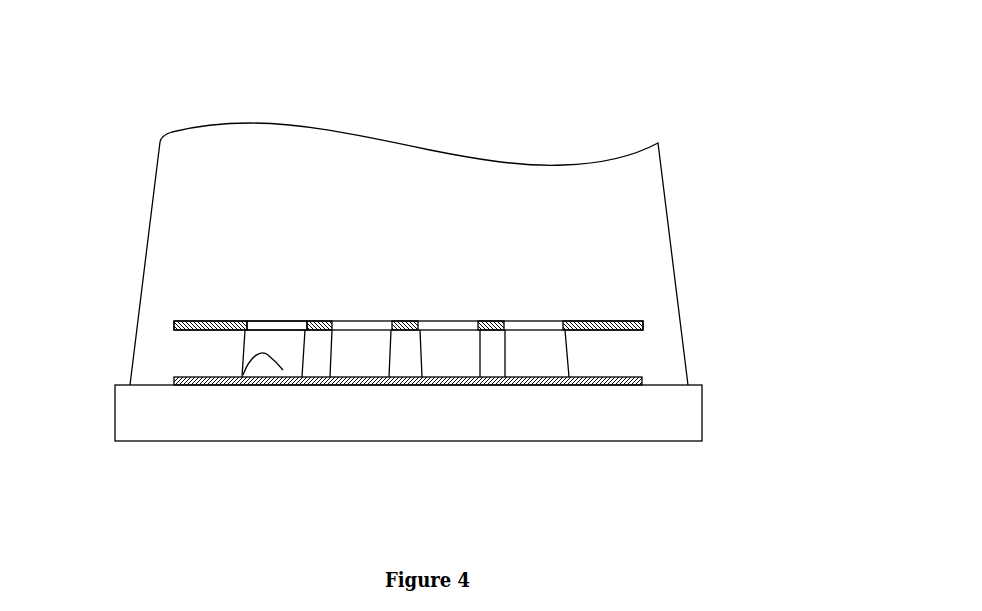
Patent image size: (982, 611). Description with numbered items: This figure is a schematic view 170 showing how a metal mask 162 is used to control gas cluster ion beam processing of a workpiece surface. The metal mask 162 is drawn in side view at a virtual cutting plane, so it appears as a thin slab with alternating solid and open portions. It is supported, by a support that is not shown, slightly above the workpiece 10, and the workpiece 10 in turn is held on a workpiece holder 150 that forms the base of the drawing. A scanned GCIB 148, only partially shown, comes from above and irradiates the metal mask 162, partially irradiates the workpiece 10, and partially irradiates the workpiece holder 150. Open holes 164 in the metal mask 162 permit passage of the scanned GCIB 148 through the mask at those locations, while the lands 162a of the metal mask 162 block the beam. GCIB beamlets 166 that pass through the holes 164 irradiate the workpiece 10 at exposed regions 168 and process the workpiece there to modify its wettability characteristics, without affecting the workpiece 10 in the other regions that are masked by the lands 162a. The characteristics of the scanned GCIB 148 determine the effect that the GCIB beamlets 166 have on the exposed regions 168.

The schematic view 170 is at (184, 92).
The scanned GCIB 148 is at (628, 222).
The workpiece holder 150 is at (687, 413).
The workpiece 10 is at (623, 374).
The metal mask 162 is at (474, 251).
The lands of the metal mask 162a is at (317, 321).
The open holes 164 is at (273, 321).
The GCIB beamlets 166 is at (238, 351).
The exposed regions 168 is at (242, 377).